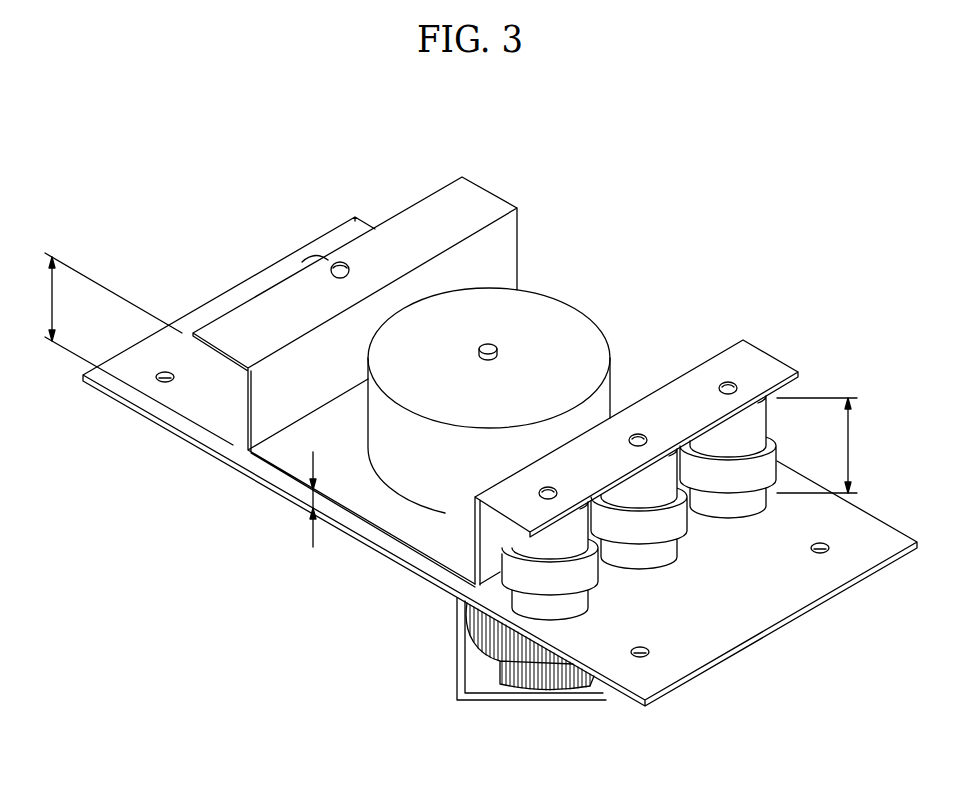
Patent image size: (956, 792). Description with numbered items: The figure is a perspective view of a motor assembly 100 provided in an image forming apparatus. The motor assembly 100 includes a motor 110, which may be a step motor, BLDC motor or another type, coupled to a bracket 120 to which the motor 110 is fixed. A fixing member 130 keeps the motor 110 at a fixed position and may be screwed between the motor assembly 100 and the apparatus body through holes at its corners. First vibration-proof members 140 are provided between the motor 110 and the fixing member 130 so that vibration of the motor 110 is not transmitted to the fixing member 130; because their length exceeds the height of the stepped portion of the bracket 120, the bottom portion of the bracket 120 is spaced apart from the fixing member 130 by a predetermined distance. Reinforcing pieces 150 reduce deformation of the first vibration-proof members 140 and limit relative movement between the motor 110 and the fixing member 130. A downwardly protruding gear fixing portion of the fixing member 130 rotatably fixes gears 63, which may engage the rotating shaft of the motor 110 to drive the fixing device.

The motor assembly 100 is at (632, 138).
The motor 110 is at (555, 312).
The bracket 120 is at (435, 205).
The fixing member 130 is at (400, 563).
The first vibration-proof members 140 is at (743, 502).
The reinforcing pieces 150 is at (723, 480).
The gears 63 is at (595, 682).